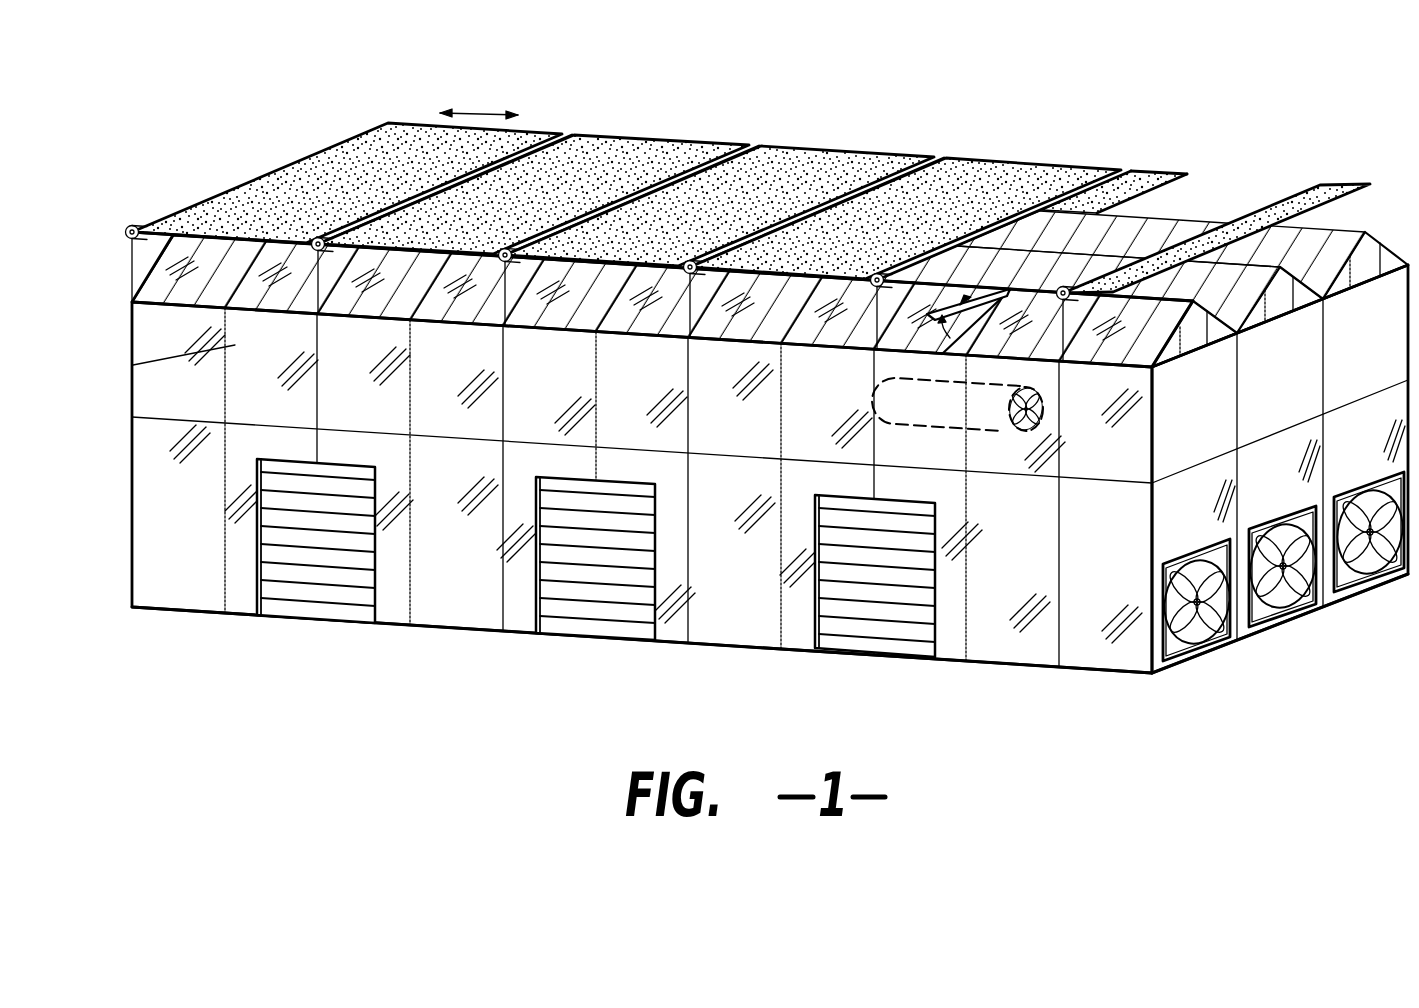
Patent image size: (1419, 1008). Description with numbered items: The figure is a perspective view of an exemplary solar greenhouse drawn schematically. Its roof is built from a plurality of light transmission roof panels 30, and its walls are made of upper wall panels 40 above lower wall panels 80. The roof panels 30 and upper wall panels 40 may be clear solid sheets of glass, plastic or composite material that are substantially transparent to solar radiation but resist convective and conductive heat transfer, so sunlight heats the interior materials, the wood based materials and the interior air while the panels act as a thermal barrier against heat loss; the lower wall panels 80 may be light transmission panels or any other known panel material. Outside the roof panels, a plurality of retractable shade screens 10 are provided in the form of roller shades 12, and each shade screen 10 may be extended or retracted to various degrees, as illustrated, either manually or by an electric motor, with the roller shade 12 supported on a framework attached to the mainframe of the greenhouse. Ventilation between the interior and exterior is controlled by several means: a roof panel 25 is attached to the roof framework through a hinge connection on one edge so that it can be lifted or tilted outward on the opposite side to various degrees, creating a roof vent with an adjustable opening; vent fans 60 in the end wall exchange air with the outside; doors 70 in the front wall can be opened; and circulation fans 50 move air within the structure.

The retractable shade screen 10 is at (363, 142).
The roller shade 12 is at (126, 232).
The roof panel 25 is at (947, 301).
The light transmission roof panel 30 is at (1167, 232).
The upper wall panel 40 is at (340, 407).
The circulation fan 50 is at (1013, 428).
The vent fan 60 is at (1205, 628).
The door 70 is at (327, 595).
The lower wall panel 80 is at (1088, 628).